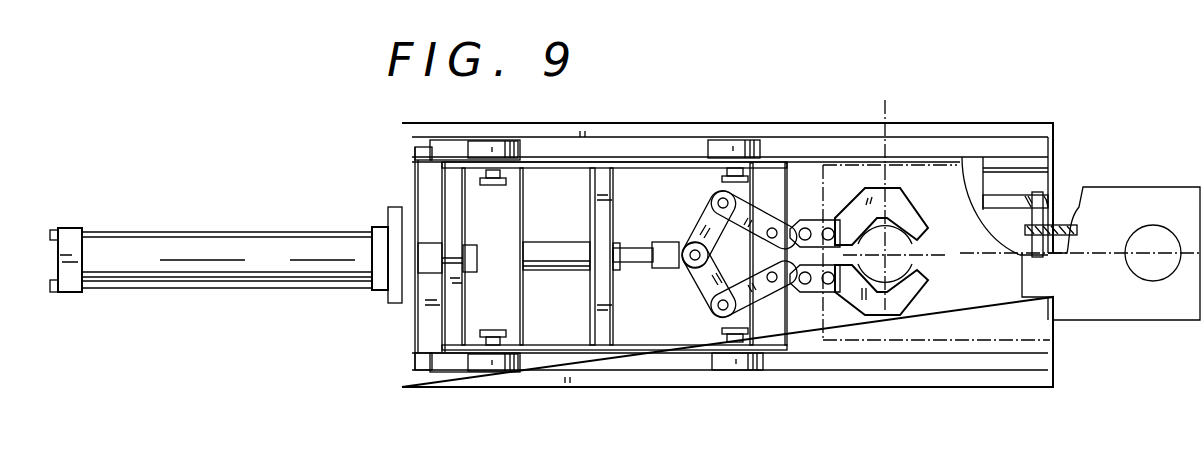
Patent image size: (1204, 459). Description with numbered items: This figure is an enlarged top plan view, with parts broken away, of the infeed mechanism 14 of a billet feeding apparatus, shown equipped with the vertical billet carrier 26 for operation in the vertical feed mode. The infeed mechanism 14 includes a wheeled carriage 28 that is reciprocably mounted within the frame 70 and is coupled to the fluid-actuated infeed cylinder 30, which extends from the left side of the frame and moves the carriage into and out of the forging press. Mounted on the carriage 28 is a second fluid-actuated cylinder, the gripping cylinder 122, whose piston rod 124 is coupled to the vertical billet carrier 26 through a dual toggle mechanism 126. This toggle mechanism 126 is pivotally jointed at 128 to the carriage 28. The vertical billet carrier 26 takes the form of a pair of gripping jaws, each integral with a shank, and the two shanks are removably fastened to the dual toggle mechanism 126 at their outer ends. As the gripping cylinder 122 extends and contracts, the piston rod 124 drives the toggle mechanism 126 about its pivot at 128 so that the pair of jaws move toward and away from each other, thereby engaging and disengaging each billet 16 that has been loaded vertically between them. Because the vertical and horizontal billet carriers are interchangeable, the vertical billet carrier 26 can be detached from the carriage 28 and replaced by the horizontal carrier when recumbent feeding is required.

The infeed mechanism 14 is at (986, 113).
The billet 16 is at (905, 251).
The vertical billet carrier 26 is at (905, 186).
The wheeled carriage 28 is at (608, 352).
The infeed cylinder 30 is at (286, 240).
The frame 70 is at (602, 376).
The gripping cylinder 122 is at (551, 257).
The piston rod 124 is at (634, 250).
The dual toggle mechanism 126 is at (700, 212).
The pivot joint 128 is at (760, 264).